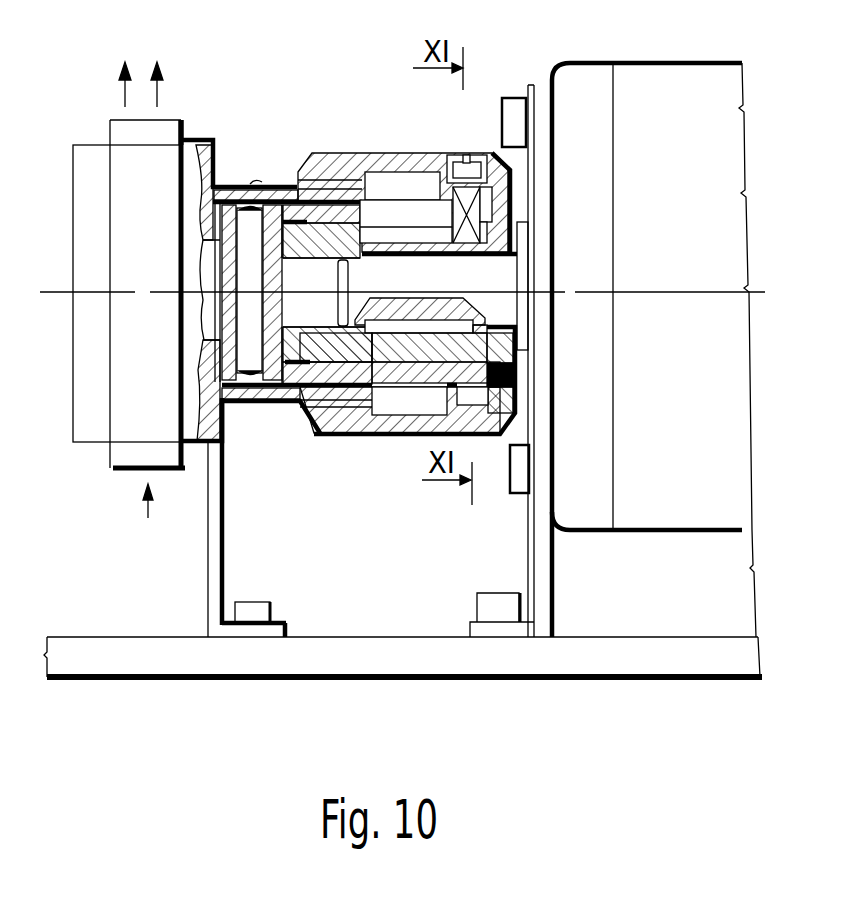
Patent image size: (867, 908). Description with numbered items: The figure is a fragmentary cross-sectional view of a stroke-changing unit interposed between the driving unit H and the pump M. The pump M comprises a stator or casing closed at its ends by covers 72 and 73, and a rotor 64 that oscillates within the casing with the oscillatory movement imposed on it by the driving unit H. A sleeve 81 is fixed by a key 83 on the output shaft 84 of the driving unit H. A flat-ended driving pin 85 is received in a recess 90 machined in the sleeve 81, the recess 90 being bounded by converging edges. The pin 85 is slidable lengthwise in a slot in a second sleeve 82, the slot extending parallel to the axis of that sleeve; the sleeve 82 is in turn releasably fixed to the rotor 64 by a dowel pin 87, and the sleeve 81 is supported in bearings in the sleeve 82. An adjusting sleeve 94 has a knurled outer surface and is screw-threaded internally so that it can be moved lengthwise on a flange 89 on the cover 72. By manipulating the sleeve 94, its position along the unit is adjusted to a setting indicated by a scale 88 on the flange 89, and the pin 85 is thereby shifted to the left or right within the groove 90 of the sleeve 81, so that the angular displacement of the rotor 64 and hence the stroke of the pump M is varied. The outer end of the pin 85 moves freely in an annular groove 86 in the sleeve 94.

The pump M is at (163, 137).
The driving unit H is at (647, 83).
The cover 72 is at (205, 160).
The cover 73 is at (92, 423).
The scale 88 is at (272, 173).
The sleeve 94 is at (322, 170).
The output shaft 84 is at (398, 275).
The driving pin 85 is at (465, 247).
The dowel pin 87 is at (250, 282).
The rotor 64 is at (277, 312).
The recess 90 is at (390, 306).
The sleeve 82 is at (250, 383).
The sleeve 81 is at (323, 437).
The flange 89 is at (362, 437).
The key 83 is at (417, 323).
The annular groove 86 is at (480, 395).